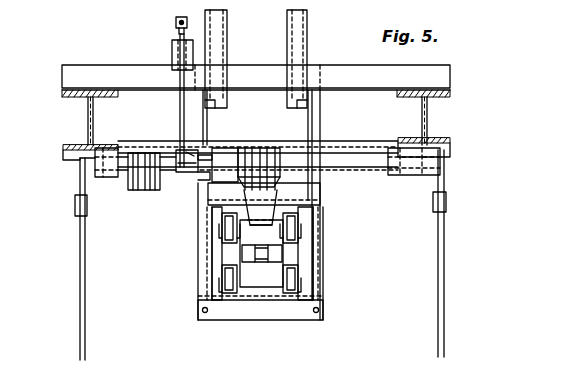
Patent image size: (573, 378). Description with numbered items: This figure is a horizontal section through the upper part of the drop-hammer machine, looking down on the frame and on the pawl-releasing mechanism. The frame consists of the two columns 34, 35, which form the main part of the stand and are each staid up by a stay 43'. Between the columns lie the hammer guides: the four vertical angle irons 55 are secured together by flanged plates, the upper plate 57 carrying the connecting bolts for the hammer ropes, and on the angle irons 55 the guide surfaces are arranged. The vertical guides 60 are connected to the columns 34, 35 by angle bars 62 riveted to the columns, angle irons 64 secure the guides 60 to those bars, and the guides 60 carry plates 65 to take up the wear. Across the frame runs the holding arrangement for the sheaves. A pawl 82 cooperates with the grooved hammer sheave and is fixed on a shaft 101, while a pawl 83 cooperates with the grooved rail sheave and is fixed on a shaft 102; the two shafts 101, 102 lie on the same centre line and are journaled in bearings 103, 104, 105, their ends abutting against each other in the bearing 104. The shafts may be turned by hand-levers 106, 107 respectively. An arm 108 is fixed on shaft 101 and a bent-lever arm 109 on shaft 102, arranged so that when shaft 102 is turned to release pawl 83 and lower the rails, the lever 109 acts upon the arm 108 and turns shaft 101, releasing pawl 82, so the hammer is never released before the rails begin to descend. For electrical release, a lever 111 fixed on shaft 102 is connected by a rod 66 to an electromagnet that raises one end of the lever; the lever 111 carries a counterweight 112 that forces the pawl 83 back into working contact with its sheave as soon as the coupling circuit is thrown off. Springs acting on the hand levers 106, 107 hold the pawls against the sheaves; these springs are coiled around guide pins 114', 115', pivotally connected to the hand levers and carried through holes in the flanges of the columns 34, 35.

The column 34 is at (427, 120).
The column 35 is at (88, 115).
The stay 43' is at (256, 59).
The vertical angle plate 55 is at (259, 253).
The upper plate 57 is at (262, 265).
The vertical guide 60 is at (298, 220).
The angle bar 62 is at (200, 298).
The angle iron 64 is at (300, 196).
The wear plate 65 is at (225, 235).
The rod 66 is at (176, 22).
The pawl 82 is at (262, 150).
The pawl 83 is at (145, 152).
The shaft 101 is at (358, 162).
The shaft 102 is at (197, 168).
The bearing 103 is at (410, 172).
The bearing 104 is at (202, 182).
The bearing 105 is at (107, 177).
The hand-lever 106 is at (444, 261).
The hand-lever 107 is at (80, 283).
The arm 108 is at (230, 150).
The arm 109 is at (182, 150).
The lever 111 is at (180, 104).
The counterweight 112 is at (172, 50).
The guide pin 114' is at (466, 202).
The guide pin 115' is at (59, 205).